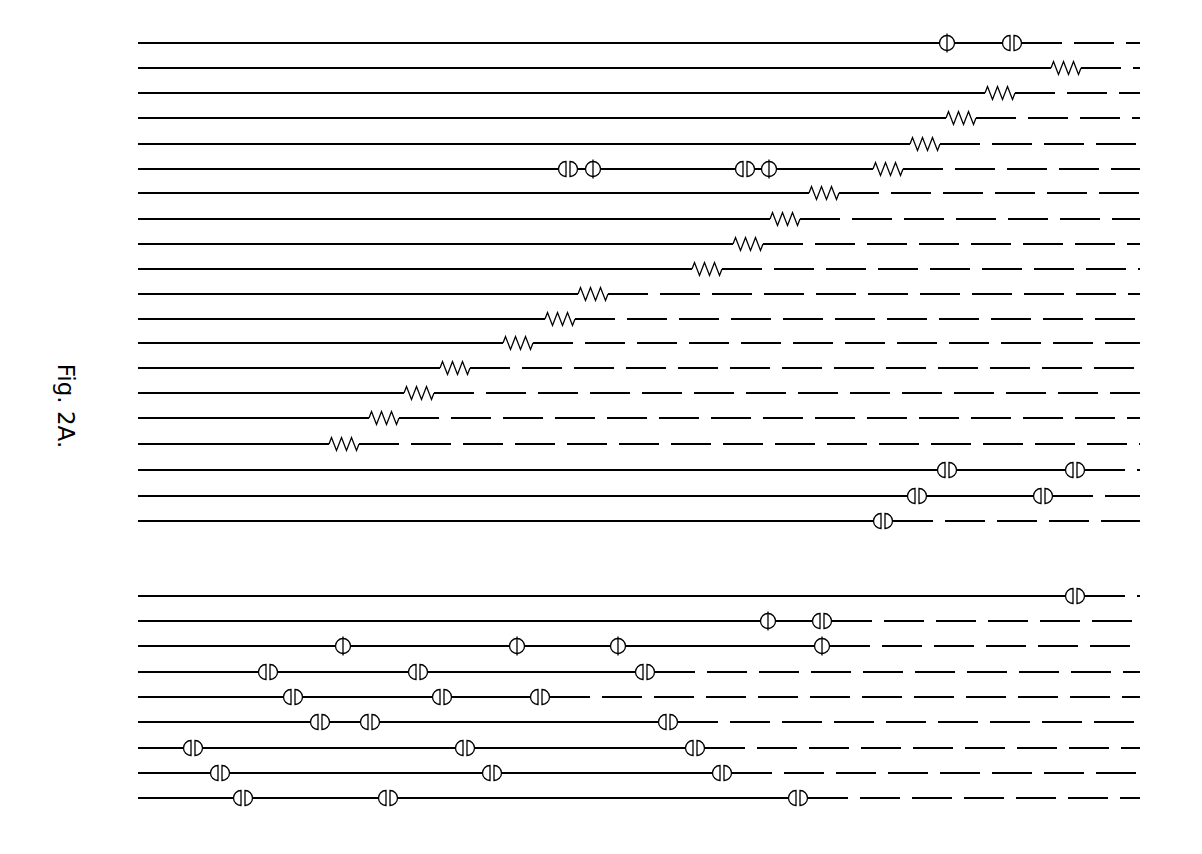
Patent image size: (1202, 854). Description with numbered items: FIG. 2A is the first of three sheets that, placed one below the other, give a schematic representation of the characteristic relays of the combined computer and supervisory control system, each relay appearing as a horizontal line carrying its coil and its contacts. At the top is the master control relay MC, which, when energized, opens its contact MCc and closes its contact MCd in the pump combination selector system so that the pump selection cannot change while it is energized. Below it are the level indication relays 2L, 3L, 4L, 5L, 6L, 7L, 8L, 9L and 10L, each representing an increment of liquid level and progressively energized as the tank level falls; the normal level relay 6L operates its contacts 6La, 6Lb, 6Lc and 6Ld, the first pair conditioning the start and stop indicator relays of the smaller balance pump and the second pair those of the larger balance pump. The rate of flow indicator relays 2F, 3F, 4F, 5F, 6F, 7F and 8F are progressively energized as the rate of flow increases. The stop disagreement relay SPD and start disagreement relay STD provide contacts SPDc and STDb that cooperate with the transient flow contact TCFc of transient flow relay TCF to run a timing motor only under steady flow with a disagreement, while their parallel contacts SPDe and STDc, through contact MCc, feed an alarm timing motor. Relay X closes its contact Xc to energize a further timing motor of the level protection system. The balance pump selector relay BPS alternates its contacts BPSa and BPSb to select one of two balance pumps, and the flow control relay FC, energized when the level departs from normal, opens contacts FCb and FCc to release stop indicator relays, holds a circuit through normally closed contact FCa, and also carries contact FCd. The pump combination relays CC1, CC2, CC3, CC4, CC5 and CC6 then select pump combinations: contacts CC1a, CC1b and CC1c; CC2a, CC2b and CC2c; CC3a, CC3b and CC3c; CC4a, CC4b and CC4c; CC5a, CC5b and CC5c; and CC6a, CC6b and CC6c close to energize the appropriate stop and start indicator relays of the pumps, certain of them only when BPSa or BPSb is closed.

The master control relay MC is at (656, 42).
The master control contact MCc is at (946, 36).
The master control contact MCd is at (1008, 35).
The level indication relay 2L is at (1053, 64).
The level indication relay 3L is at (1008, 88).
The level indication relay 4L is at (948, 114).
The level indication relay 5L is at (912, 139).
The normal level indicator relay 6L is at (876, 163).
The contact of relay 6L 6La is at (736, 173).
The contact of relay 6L 6Lb is at (774, 163).
The contact of relay 6L 6Lc is at (597, 176).
The contact of relay 6L 6Ld is at (560, 173).
The level indication relay 7L is at (834, 187).
The level indication relay 8L is at (771, 214).
The level indication relay 9L is at (735, 239).
The level indication relay 10L is at (694, 264).
The rate of flow indicator relay 2F is at (581, 289).
The rate of flow indicator relay 3F is at (547, 314).
The rate of flow indicator relay 4F is at (505, 338).
The rate of flow indicator relay 5F is at (442, 363).
The rate of flow indicator relay 6F is at (406, 388).
The rate of flow indicator relay 7F is at (371, 413).
The rate of flow indicator relay 8F is at (331, 439).
The stop disagreement relay SPD is at (660, 469).
The contact of stop disagreement relay SPDe is at (940, 463).
The contact of stop disagreement relay SPDc is at (1068, 463).
The start disagreement relay STD is at (660, 495).
The contact of start disagreement relay STDc is at (910, 489).
The contact of start disagreement relay STDb is at (1036, 489).
The relay X is at (648, 520).
The contact of relay X Xc is at (876, 514).
The transient flow relay TCF is at (658, 595).
The transient flow contact TCFc is at (1068, 589).
The balance pump selector relay BPS is at (659, 620).
The contact of balance pump selector relay BPSa is at (765, 613).
The contact of balance pump selector relay BPSb is at (829, 614).
The flow control relay FC is at (653, 645).
The contact of flow control relay FCa is at (614, 640).
The contact of flow control relay FCb is at (514, 638).
The contact of flow control relay FCc is at (340, 638).
The FC relay contact d FCd is at (828, 640).
The pump combination relay CC1 is at (660, 671).
The contact of relay CC1 CC1a is at (260, 665).
The contact of relay CC1 CC1b is at (411, 665).
The contact of relay CC1 CC1c is at (638, 665).
The pump combination relay CC2 is at (660, 696).
The contact of relay CC2 CC2a is at (302, 690).
The contact of relay CC2 CC2b is at (450, 690).
The contact of relay CC2 CC2c is at (549, 690).
The pump combination relay CC3 is at (660, 721).
The contact of relay CC3 CC3a is at (312, 715).
The contact of relay CC3 CC3b is at (368, 715).
The contact of relay CC3 CC3c is at (661, 715).
The pump combination relay CC4 is at (660, 747).
The contact of relay CC4 CC4a is at (202, 742).
The contact of relay CC4 CC4b is at (458, 741).
The contact of relay CC4 CC4c is at (688, 741).
The pump combination relay CC5 is at (660, 772).
The contact of relay CC5 CC5a is at (229, 767).
The contact of relay CC5 CC5b is at (502, 767).
The contact of relay CC5 CC5c is at (715, 767).
The pump combination relay CC6 is at (660, 797).
The contact of relay CC6 CC6a is at (236, 792).
The contact of relay CC6 CC6b is at (381, 792).
The contact of relay CC6 CC6c is at (791, 792).